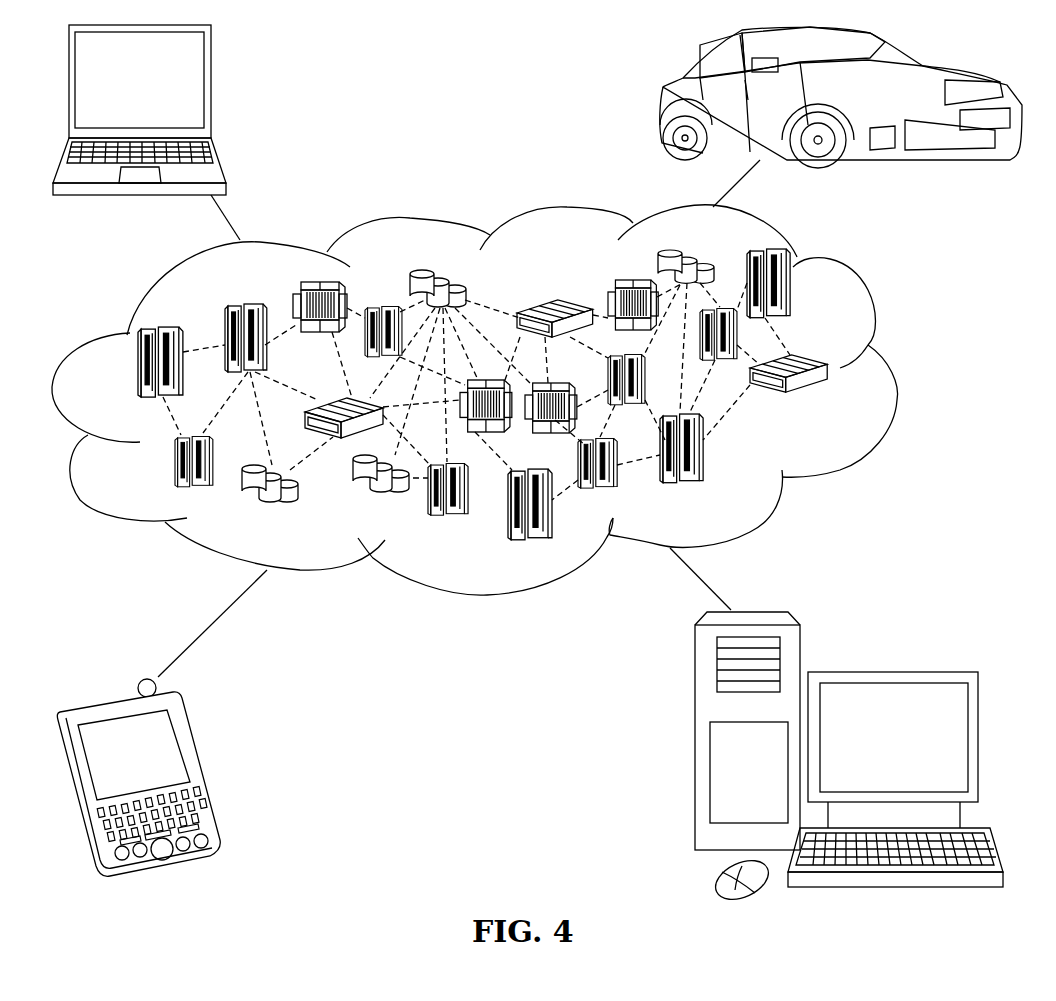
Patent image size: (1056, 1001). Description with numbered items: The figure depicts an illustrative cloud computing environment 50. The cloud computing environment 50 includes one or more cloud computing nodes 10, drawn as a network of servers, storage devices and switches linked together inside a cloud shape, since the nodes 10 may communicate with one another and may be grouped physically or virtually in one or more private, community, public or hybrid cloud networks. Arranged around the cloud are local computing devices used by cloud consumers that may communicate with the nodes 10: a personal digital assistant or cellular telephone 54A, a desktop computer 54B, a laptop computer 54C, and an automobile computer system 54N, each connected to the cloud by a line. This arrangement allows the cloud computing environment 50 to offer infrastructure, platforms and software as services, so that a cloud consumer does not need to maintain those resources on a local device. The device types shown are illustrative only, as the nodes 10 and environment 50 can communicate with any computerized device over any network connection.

The cloud computing node 10 is at (832, 403).
The cloud computing environment 50 is at (509, 400).
The personal digital assistant or cellular telephone 54A is at (203, 768).
The desktop computer 54B is at (890, 670).
The laptop computer 54C is at (211, 88).
The automobile computer system 54N is at (663, 104).